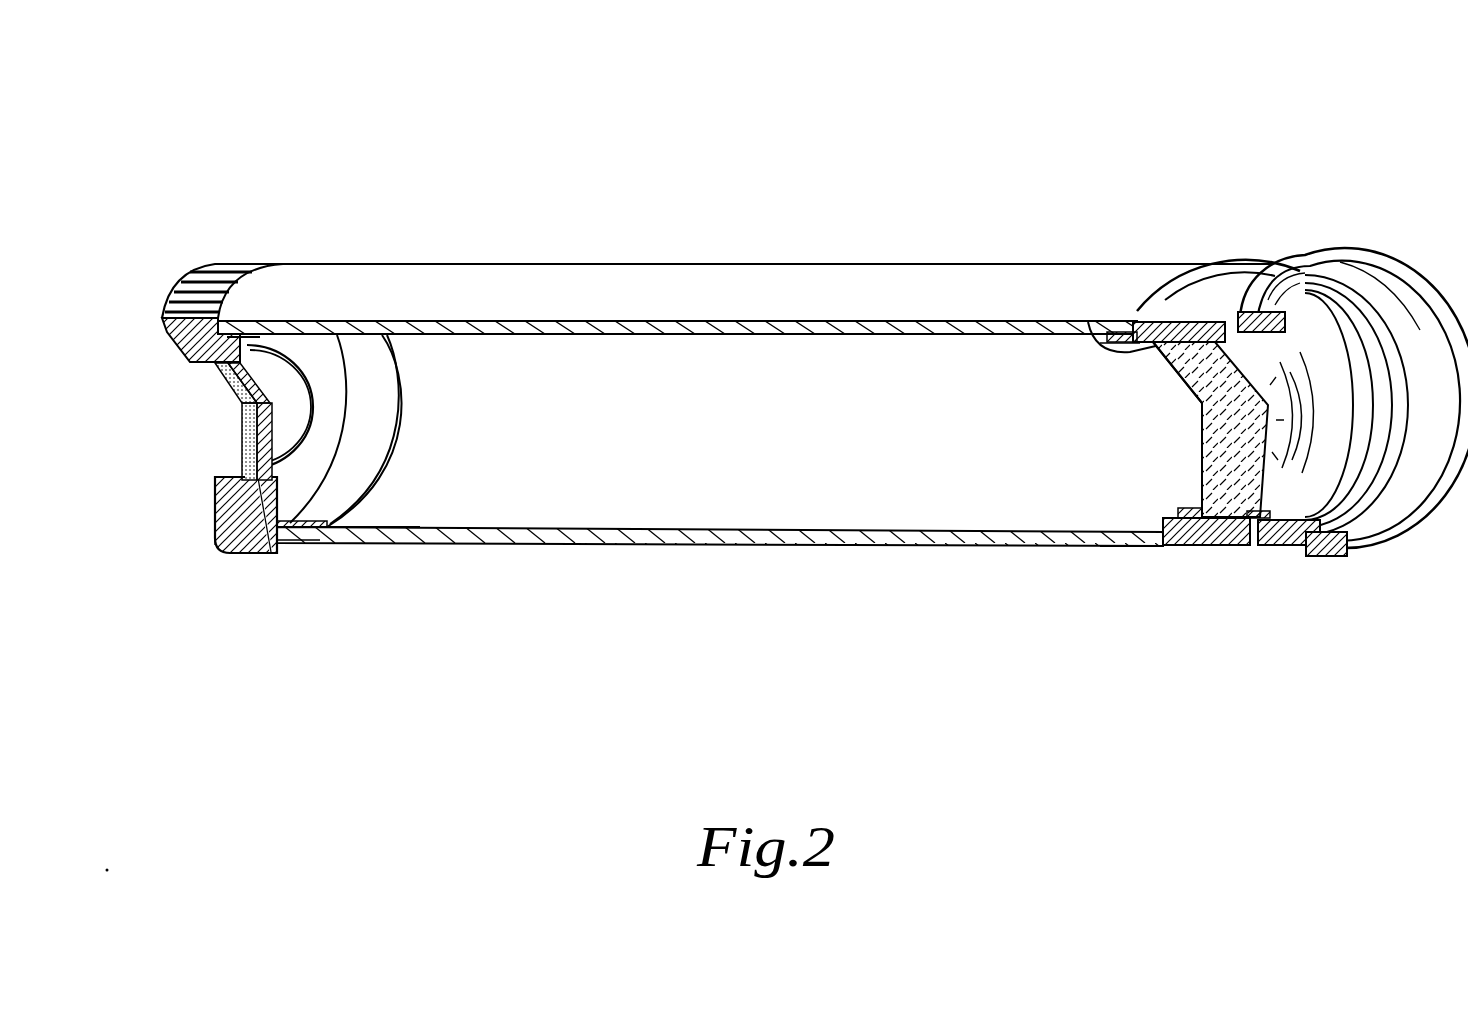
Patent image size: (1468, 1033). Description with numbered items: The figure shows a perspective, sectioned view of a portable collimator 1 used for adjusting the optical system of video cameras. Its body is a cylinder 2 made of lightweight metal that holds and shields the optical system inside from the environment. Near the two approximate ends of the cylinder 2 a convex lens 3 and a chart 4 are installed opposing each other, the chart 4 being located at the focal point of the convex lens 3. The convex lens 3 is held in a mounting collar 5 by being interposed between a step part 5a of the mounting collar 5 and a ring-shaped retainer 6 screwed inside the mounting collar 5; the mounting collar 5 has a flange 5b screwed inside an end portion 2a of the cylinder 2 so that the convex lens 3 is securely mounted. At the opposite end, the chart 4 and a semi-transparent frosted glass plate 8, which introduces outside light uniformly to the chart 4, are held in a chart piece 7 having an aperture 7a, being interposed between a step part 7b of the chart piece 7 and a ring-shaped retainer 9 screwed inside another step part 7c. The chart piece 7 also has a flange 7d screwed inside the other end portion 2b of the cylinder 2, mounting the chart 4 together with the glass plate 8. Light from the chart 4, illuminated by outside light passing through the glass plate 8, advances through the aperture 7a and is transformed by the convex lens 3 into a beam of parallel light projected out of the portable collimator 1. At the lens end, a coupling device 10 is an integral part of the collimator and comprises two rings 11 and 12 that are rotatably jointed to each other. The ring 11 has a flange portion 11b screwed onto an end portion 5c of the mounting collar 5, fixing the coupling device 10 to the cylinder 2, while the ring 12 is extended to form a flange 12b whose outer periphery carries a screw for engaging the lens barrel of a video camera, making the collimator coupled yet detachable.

The portable collimator 1 is at (157, 92).
The cylinder 2 is at (743, 268).
The end portion of the cylinder 2a is at (1183, 538).
The another end portion of the cylinder 2b is at (353, 542).
The convex lens 3 is at (1092, 320).
The chart 4 is at (290, 370).
The mounting collar 5 is at (1240, 543).
The step part of the mounting collar 5a is at (1250, 538).
The flange of the mounting collar 5b is at (1197, 543).
The end portion of the mounting collar 5c is at (1178, 373).
The retainer 6 is at (1187, 510).
The chart piece 7 is at (257, 578).
The aperture 7a is at (315, 417).
The step part of the chart piece 7b is at (272, 552).
The another step part of the chart piece 7c is at (215, 520).
The flange of the chart piece 7d is at (320, 547).
The semi-transparent glass plate 8 is at (240, 445).
The retainer 9 is at (217, 478).
The coupling device 10 is at (1342, 135).
The ring 11 is at (1240, 287).
The flange portion of the ring 11b is at (1207, 313).
The ring 12 is at (1293, 257).
The flange of the ring 12b is at (1380, 293).